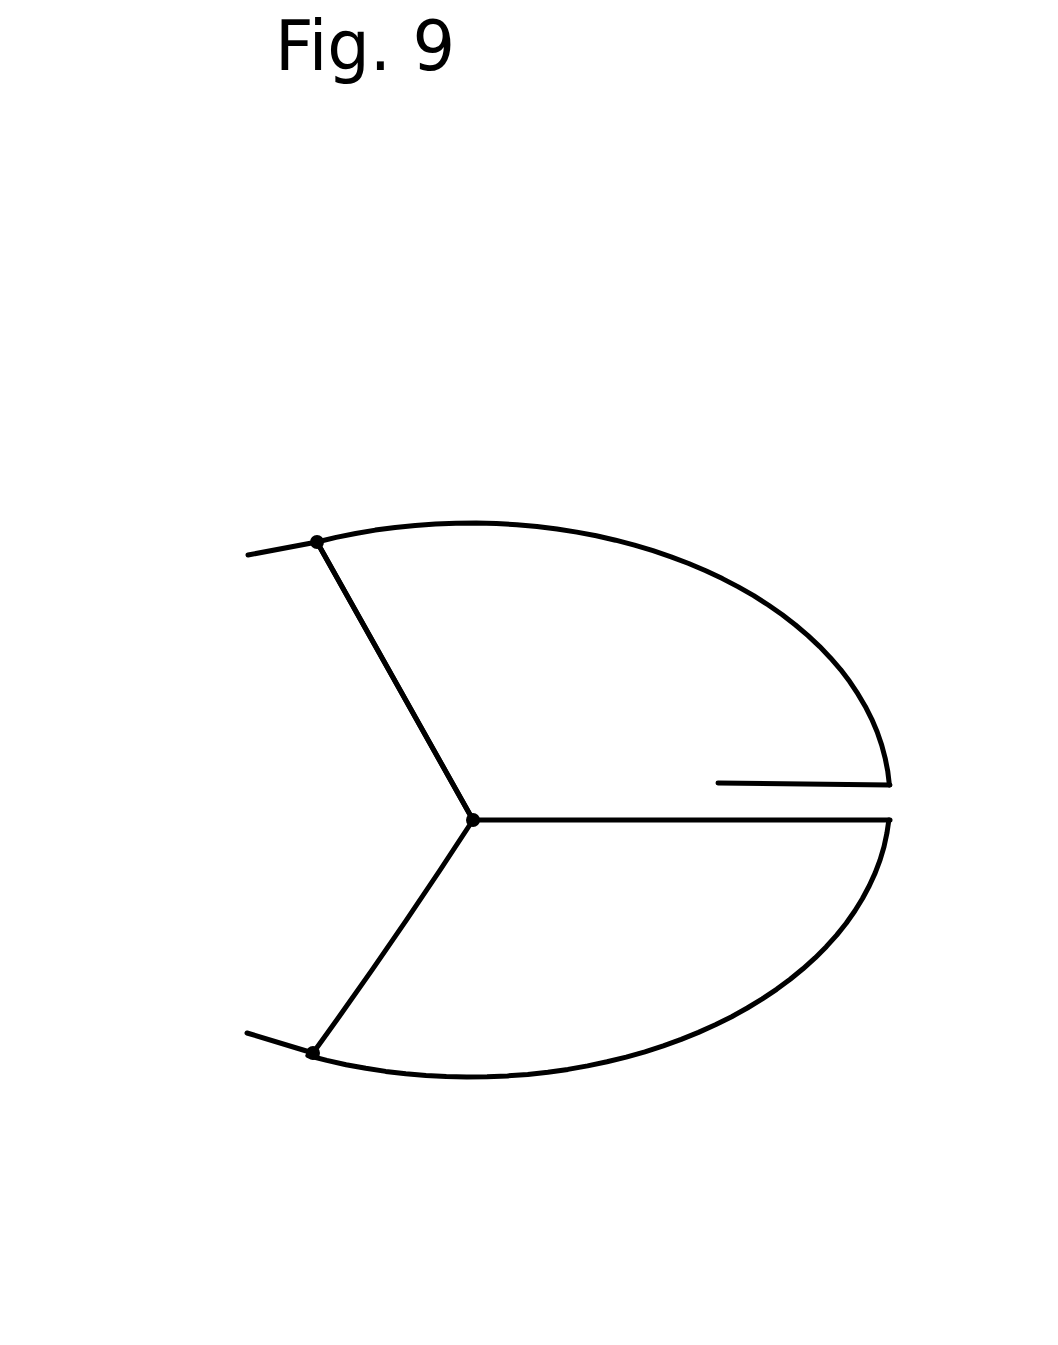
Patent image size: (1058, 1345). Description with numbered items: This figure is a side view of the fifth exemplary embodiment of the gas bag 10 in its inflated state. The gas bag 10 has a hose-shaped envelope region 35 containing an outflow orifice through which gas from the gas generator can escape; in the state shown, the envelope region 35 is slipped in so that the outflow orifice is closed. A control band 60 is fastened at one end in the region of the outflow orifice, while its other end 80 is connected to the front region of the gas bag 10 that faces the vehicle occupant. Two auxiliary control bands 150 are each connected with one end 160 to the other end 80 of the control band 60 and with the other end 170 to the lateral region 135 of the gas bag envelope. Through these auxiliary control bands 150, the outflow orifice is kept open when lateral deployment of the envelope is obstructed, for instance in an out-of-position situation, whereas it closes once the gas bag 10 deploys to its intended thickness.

The gas bag 10 is at (690, 565).
The envelope region 35 is at (805, 780).
The control band 60 is at (617, 818).
The other end of the control band 80 is at (473, 820).
The lateral region of the gas bag envelope 135 is at (405, 522).
The auxiliary control bands 150 is at (340, 907).
The one end of the auxiliary control band 160 is at (473, 820).
The other end of the auxiliary control band 170 is at (317, 542).